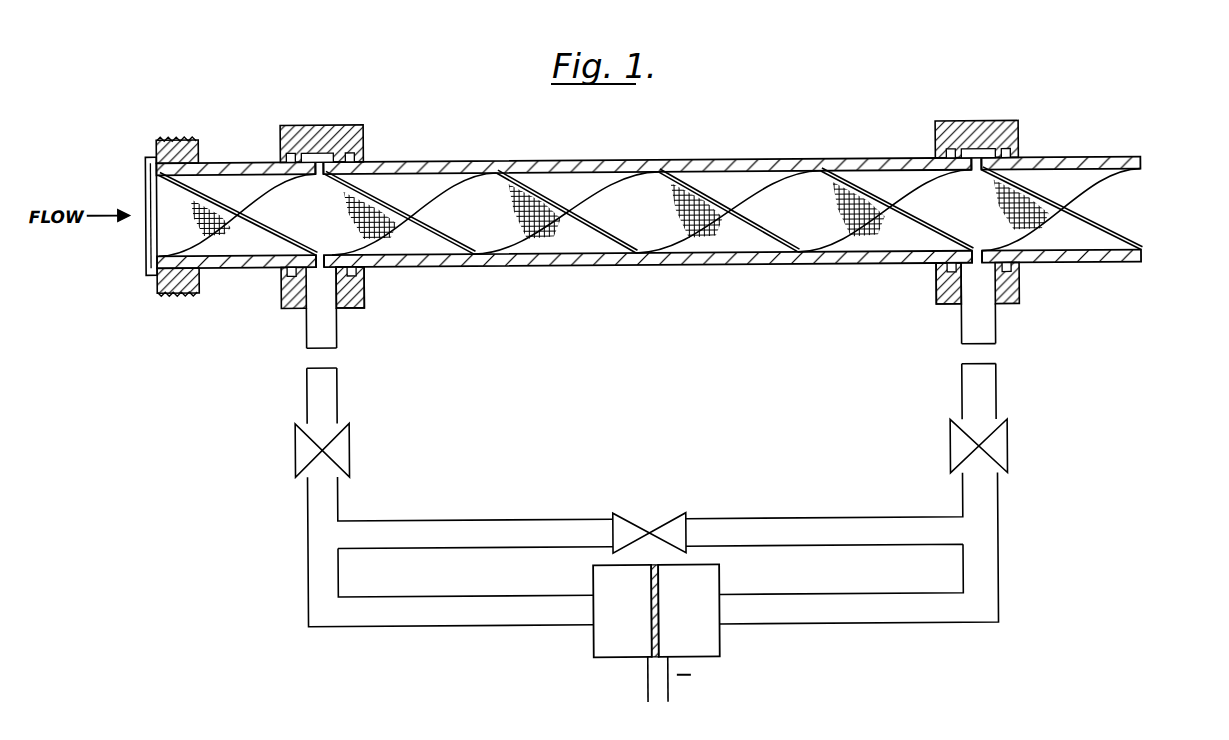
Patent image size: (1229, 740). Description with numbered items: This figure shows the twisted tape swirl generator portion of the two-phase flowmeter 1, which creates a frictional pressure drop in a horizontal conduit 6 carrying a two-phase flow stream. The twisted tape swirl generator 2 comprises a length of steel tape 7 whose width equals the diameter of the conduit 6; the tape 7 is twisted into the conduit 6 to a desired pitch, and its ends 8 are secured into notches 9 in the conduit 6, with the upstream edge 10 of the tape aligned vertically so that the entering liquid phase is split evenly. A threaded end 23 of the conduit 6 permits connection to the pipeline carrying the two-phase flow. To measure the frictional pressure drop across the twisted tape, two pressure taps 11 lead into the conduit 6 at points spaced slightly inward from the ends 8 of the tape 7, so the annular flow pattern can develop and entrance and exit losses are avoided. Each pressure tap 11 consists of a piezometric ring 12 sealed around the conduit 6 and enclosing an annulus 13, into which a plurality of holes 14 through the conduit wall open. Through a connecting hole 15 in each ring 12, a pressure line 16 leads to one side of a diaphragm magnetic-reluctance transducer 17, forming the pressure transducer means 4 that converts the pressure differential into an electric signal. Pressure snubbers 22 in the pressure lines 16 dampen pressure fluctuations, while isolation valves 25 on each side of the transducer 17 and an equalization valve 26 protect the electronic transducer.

The flowmeter 1 is at (250, 92).
The twisted tape swirl generator 2 is at (470, 162).
The pressure transducer means 4 is at (708, 637).
The horizontal conduit 6 is at (580, 161).
The steel tape 7 is at (690, 190).
The ends of the tape 8 is at (158, 174).
The notches 9 is at (153, 172).
The upstream edge 10 is at (173, 227).
The pressure taps 11 is at (365, 290).
The piezometric ring 12 is at (365, 134).
The annulus 13 is at (322, 158).
The holes 14 is at (321, 170).
The connecting hole 15 is at (338, 318).
The pressure line 16 is at (307, 389).
The diaphragm magnetic-reluctance transducer 17 is at (600, 637).
The pressure snubbers 22 is at (325, 356).
The threaded end of the conduit 23 is at (167, 142).
The isolation valves 25 is at (335, 462).
The equalization valve 26 is at (656, 522).